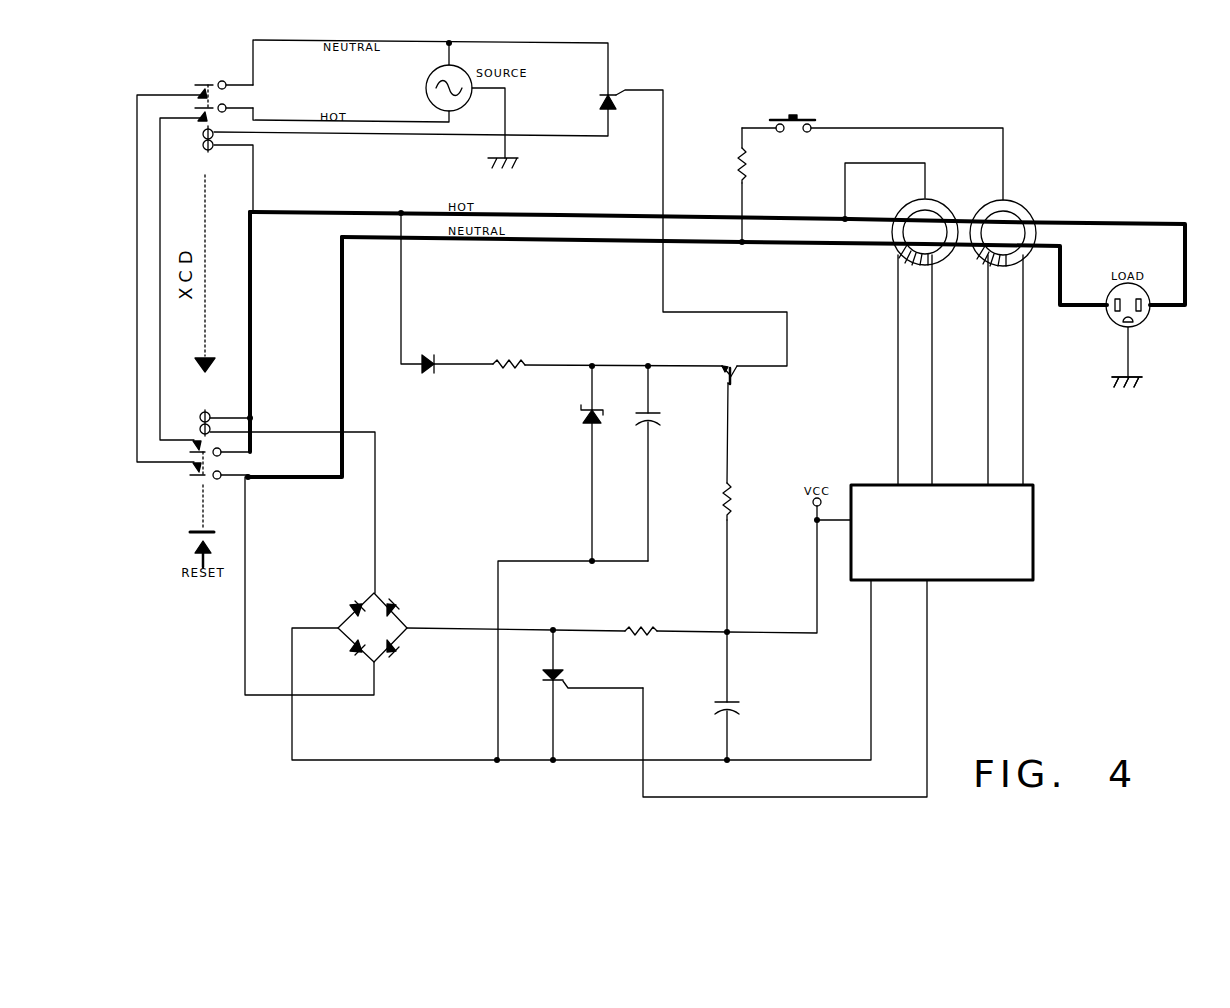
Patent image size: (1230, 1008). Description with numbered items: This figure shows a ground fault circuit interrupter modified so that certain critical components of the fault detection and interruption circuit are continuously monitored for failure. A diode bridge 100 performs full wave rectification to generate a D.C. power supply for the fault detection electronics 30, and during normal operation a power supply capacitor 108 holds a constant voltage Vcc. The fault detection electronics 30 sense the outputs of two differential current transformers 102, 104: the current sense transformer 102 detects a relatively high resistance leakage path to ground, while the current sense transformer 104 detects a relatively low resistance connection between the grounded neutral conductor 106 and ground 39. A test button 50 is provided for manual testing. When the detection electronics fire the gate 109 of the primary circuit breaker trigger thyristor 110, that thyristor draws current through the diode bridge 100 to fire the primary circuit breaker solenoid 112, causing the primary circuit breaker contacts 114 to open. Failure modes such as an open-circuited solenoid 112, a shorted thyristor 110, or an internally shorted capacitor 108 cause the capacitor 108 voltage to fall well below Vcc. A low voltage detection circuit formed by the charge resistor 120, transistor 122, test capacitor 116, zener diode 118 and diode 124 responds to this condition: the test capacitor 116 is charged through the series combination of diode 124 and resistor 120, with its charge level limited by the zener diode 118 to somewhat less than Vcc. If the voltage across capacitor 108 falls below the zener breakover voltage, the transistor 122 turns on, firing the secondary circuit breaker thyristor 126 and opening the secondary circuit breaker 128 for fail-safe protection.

The secondary circuit breaker 128 is at (196, 75).
The secondary circuit breaker thyristor 126 is at (630, 80).
The test button 50 is at (798, 138).
The current sense transformer 102 is at (947, 198).
The current sense transformer 104 is at (1027, 200).
The neutral conductor 106 is at (857, 253).
The ground 39 is at (1103, 375).
The diode 124 is at (445, 344).
The charge resistor 120 is at (512, 353).
The transistor 122 is at (750, 380).
The zener diode 118 is at (580, 436).
The test capacitor 116 is at (655, 427).
The primary circuit breaker solenoid 112 is at (192, 407).
The primary circuit breaker contacts 114 is at (180, 479).
The diode bridge 100 is at (338, 605).
The primary circuit breaker trigger thyristor 110 is at (543, 686).
The gate of thyristor 109 is at (598, 700).
The power supply capacitor 108 is at (745, 692).
The detection electronics 30 is at (986, 590).